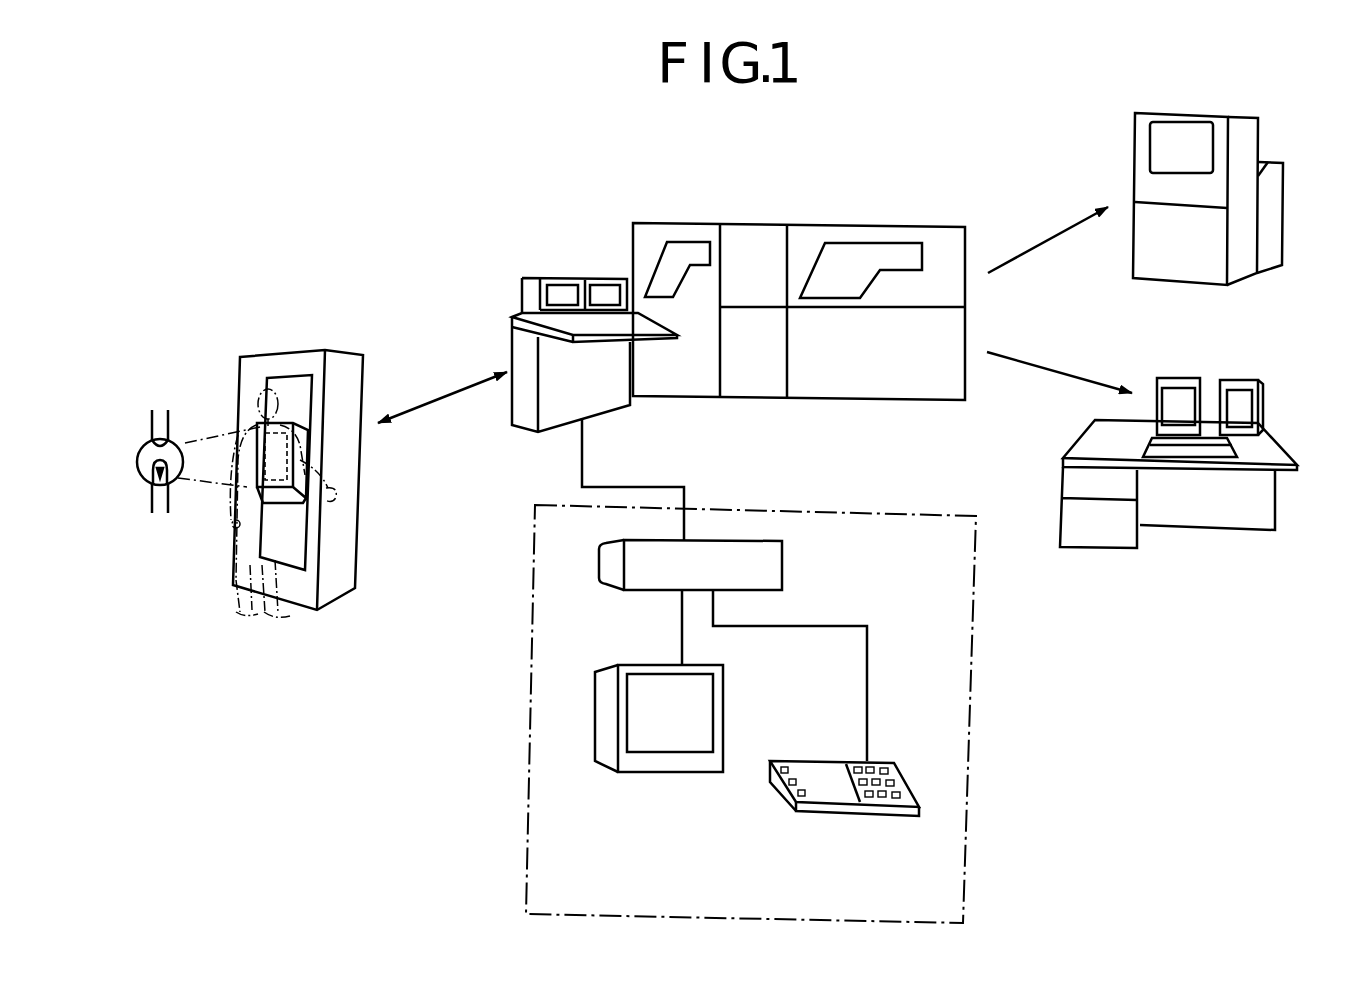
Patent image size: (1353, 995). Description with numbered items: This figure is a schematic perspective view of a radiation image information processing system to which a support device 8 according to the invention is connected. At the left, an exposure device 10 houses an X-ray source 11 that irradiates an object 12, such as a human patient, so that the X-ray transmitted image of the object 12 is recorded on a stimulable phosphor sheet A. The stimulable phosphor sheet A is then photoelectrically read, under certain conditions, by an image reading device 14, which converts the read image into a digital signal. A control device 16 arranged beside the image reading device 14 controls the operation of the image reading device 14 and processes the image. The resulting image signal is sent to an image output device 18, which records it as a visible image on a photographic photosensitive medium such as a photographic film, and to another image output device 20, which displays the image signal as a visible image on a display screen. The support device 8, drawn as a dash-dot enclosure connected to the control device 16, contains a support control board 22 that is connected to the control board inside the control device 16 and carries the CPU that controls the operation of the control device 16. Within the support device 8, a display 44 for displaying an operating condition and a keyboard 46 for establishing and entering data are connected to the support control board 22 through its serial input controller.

The support device 8 is at (963, 667).
The exposure device 10 is at (294, 333).
The X-ray source 11 is at (141, 466).
The object 12 is at (242, 510).
The image reading device 14 is at (812, 403).
The control device 16 is at (582, 270).
The image output device 18 is at (1270, 152).
The image output device 20 is at (1273, 420).
The support control board 22 is at (786, 573).
The display 44 is at (727, 704).
The keyboard 46 is at (898, 772).
The stimulable phosphor sheet A is at (312, 460).